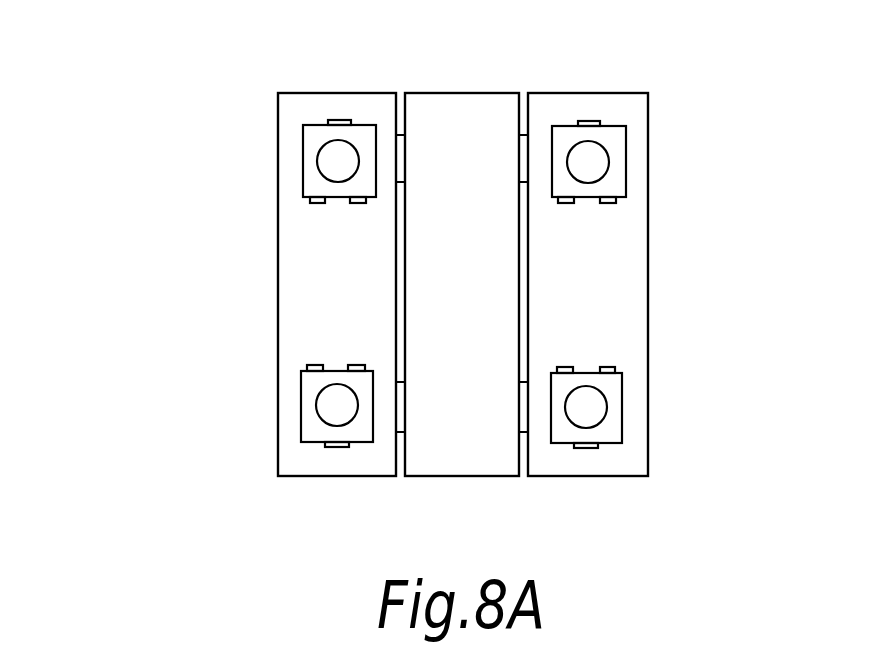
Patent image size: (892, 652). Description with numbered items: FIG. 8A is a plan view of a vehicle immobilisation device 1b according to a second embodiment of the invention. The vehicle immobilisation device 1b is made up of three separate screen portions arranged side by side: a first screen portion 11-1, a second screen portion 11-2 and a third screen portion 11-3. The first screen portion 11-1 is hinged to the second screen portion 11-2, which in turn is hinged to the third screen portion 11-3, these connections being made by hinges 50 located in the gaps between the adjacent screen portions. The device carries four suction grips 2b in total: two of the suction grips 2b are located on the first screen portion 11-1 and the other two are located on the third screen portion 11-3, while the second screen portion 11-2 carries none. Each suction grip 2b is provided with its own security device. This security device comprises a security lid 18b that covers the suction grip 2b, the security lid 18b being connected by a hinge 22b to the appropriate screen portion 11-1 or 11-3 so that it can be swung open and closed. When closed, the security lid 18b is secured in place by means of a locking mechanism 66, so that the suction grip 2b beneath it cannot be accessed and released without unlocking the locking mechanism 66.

The vehicle immobilisation device 1b is at (240, 227).
The first screen portion 11-1 is at (327, 93).
The second screen portion 11-2 is at (458, 93).
The third screen portion 11-3 is at (570, 93).
The hinges 50 is at (519, 407).
The locking mechanism 66 is at (602, 122).
The security lid 18b is at (626, 143).
The suction grip 2b is at (608, 170).
The hinge 22b is at (608, 204).